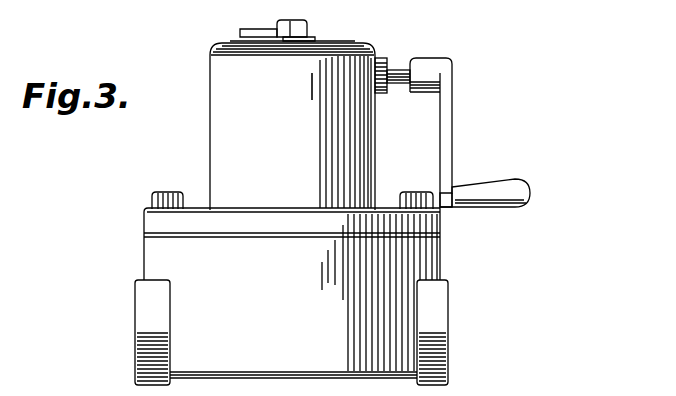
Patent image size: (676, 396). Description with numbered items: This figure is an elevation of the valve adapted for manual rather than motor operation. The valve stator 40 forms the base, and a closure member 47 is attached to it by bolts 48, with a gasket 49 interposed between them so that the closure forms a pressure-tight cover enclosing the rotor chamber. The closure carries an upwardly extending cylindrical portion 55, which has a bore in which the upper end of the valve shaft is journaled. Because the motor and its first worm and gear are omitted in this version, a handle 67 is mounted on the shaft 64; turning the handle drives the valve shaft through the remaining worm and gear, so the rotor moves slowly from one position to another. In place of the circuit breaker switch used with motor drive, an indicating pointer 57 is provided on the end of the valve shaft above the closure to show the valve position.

The valve stator 40 is at (145, 265).
The closure member 47 is at (153, 229).
The bolts 48 is at (166, 196).
The gasket 49 is at (273, 246).
The upwardly extending cylindrical portion 55 is at (221, 144).
The indicating pointer 57 is at (232, 33).
The shaft 64 is at (399, 63).
The handle 67 is at (513, 185).